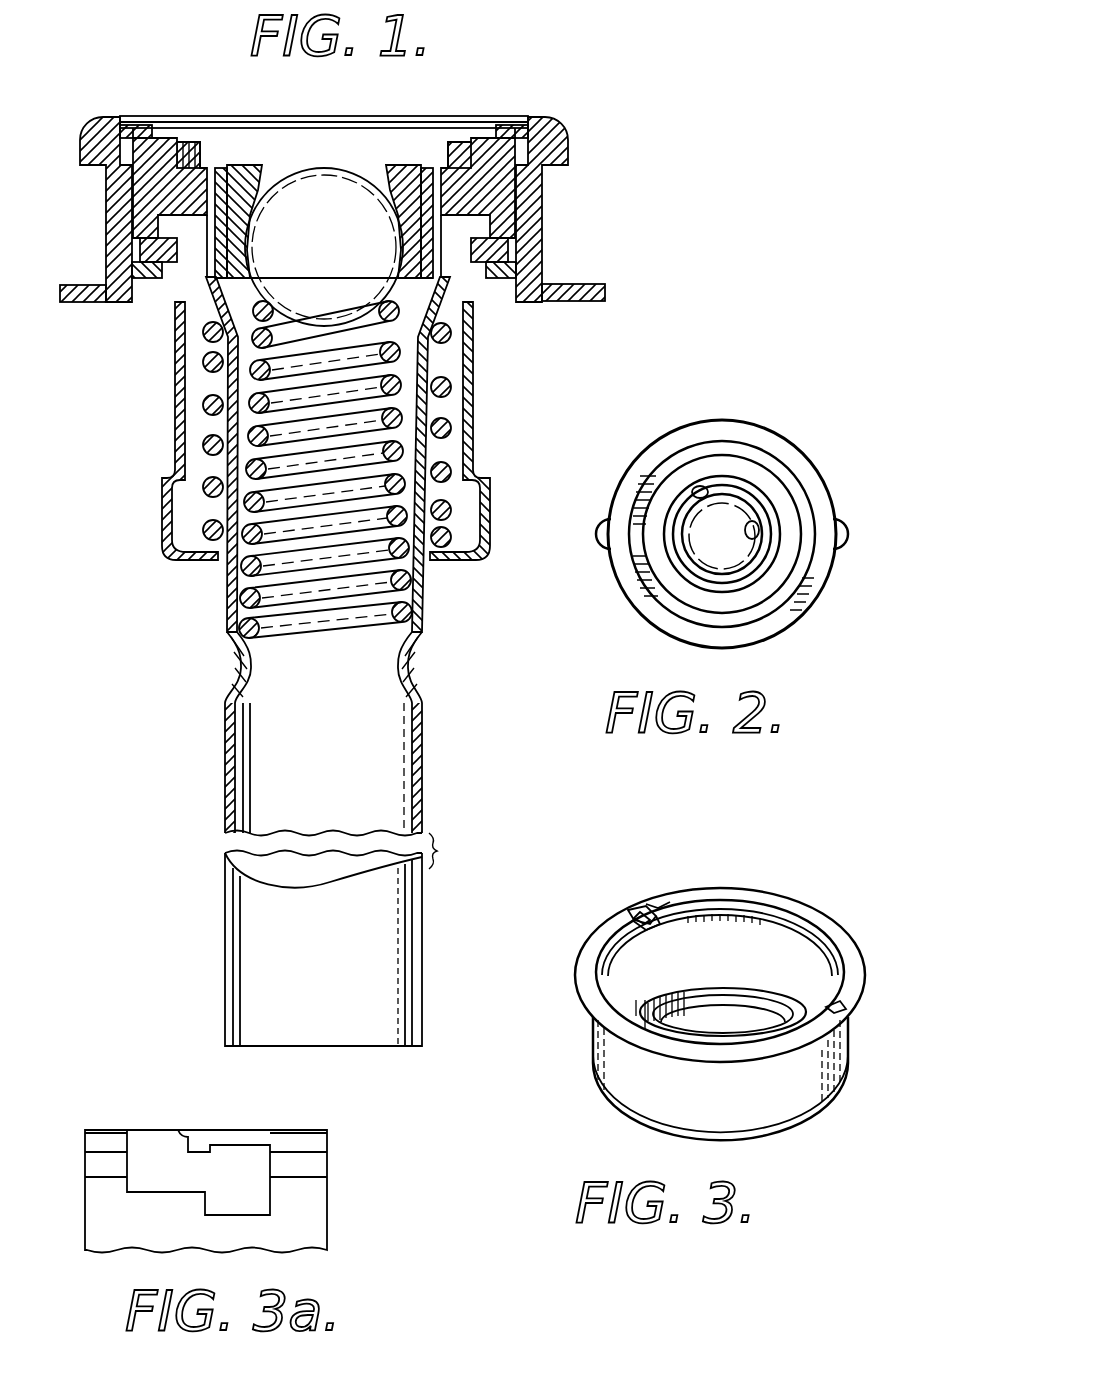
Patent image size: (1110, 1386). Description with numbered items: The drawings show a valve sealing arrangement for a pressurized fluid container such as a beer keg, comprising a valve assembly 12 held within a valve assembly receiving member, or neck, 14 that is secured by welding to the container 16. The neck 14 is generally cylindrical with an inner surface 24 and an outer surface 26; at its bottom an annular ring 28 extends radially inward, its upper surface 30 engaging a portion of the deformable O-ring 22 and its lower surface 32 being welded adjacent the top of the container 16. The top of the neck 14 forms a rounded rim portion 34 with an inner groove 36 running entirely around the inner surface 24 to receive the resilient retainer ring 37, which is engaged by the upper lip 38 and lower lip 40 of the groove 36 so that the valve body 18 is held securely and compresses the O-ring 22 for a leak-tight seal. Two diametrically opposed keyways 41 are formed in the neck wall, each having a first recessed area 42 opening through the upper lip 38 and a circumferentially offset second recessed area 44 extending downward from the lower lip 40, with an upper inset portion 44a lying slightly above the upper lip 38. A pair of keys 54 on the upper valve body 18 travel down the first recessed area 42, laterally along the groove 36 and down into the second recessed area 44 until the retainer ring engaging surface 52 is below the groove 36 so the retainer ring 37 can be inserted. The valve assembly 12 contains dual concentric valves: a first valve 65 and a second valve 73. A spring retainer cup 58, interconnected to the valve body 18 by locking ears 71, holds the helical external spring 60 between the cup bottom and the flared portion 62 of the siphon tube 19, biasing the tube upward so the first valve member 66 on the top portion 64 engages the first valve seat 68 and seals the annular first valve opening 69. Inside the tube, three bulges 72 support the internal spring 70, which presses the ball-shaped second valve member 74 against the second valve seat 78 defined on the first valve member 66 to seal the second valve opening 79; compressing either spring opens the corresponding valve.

In FIG. 1, the valve assembly 12 is at (146, 464).
In FIG. 2, the valve assembly 12 is at (828, 597).
In FIG. 1, the valve assembly receiving member 14 is at (548, 225).
In FIG. 3, the valve assembly receiving member 14 is at (606, 1056).
In FIG. 1, the container 16 is at (608, 293).
In FIG. 1, the valve body 18 is at (140, 182).
In FIG. 2, the valve body 18 is at (805, 446).
In FIG. 1, the siphon tube 19 is at (225, 611).
In FIG. 1, the O-ring 22 is at (525, 259).
In FIG. 1, the inner surface 24 is at (548, 186).
In FIG. 1, the outer surface 26 is at (552, 213).
In FIG. 1, the annular ring 28 is at (518, 303).
In FIG. 1, the upper surface 30 is at (520, 278).
In FIG. 3, the upper surface 30 is at (745, 997).
In FIG. 1, the lower surface 32 is at (536, 296).
In FIG. 1, the rim portion 34 is at (566, 128).
In FIG. 3, the rim portion 34 is at (576, 963).
In FIG. 1, the inner groove 36 is at (510, 128).
In FIG. 3, the inner groove 36 is at (757, 906).
In FIG. 3A, the inner groove 36 is at (276, 1166).
In FIG. 1, the resilient retainer ring 37 is at (405, 127).
In FIG. 1, the upper lip 38 is at (140, 128).
In FIG. 3, the upper lip 38 is at (686, 901).
In FIG. 3A, the upper lip 38 is at (300, 1161).
In FIG. 3, the lower lip 40 is at (698, 916).
In FIG. 3A, the lower lip 40 is at (300, 1181).
In FIG. 3, the keyway 41 is at (645, 910).
In FIG. 3A, the keyway 41 is at (180, 1135).
In FIG. 3, the first recessed area 42 is at (626, 908).
In FIG. 3A, the first recessed area 42 is at (152, 1165).
In FIG. 3, the second recessed area 44 is at (656, 928).
In FIG. 3A, the second recessed area 44 is at (255, 1201).
In FIG. 3, the upper inset portion 44a is at (672, 900).
In FIG. 3A, the upper inset portion 44a is at (242, 1145).
In FIG. 1, the retainer ring engaging surface 52 is at (148, 136).
In FIG. 2, the retainer ring engaging surface 52 is at (812, 466).
In FIG. 1, the keys 54 is at (572, 158).
In FIG. 2, the keys 54 is at (858, 534).
In FIG. 1, the spring retainer cup 58 is at (162, 533).
In FIG. 1, the external spring 60 is at (203, 408).
In FIG. 1, the flared portion 62 is at (185, 327).
In FIG. 1, the top portion 64 is at (200, 266).
In FIG. 1, the first valve 65 is at (447, 162).
In FIG. 1, the first valve member 66 is at (252, 273).
In FIG. 2, the first valve member 66 is at (733, 490).
In FIG. 1, the first valve seat 68 is at (228, 182).
In FIG. 1, the first valve opening 69 is at (447, 213).
In FIG. 2, the first valve opening 69 is at (698, 488).
In FIG. 1, the internal spring 70 is at (410, 591).
In FIG. 1, the locking ears 71 is at (152, 251).
In FIG. 1, the bulges 72 is at (243, 670).
In FIG. 1, the second valve 73 is at (325, 178).
In FIG. 1, the second valve member 74 is at (313, 270).
In FIG. 2, the second valve member 74 is at (709, 549).
In FIG. 1, the second valve seat 78 is at (256, 212).
In FIG. 2, the second valve seat 78 is at (758, 520).
In FIG. 1, the second valve opening 79 is at (281, 127).